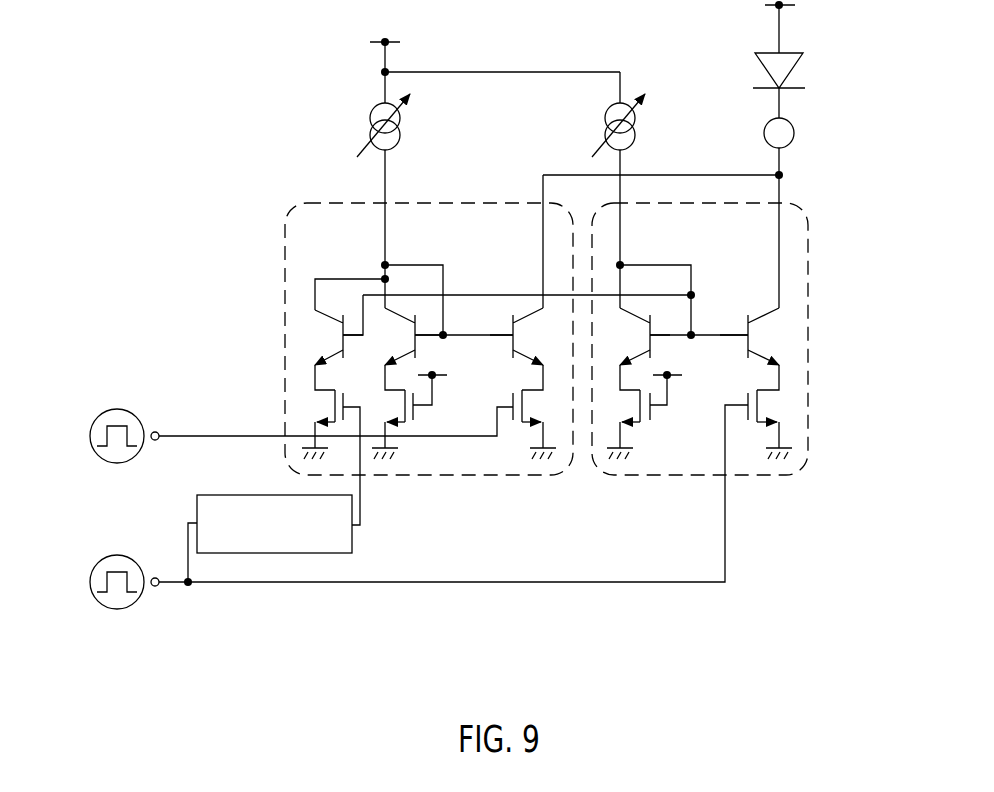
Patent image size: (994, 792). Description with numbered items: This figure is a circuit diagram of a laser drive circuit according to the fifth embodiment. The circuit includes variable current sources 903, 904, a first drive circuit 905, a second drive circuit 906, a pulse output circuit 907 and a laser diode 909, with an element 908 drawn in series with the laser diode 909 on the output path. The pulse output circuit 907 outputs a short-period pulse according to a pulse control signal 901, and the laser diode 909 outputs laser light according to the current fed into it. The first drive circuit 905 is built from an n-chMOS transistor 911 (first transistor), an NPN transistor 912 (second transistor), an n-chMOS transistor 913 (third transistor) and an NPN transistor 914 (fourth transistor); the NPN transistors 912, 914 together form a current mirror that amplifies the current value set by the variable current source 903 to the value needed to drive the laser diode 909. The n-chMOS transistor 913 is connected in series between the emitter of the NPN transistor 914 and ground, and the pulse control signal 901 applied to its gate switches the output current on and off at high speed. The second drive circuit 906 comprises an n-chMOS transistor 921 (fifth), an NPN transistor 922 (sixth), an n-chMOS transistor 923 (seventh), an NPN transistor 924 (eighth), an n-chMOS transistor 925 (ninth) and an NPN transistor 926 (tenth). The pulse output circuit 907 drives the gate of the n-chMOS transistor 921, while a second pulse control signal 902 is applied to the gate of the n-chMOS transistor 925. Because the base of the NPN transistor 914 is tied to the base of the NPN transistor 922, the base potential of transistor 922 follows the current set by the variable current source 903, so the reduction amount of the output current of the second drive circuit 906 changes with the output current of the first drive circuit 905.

The pulse control signal 901 is at (90, 582).
The second pulse control signal 902 is at (90, 436).
The variable current source 903 is at (603, 122).
The variable current source 904 is at (368, 122).
The first drive circuit 905 is at (808, 282).
The second drive circuit 906 is at (285, 255).
The pulse output circuit 907 is at (197, 507).
The current meter / load 908 is at (795, 133).
The laser diode 909 is at (795, 70).
The n-chMOS transistor 911 is at (640, 425).
The NPN transistor 912 is at (637, 313).
The n-chMOS transistor 913 is at (770, 405).
The NPN transistor 914 is at (770, 337).
The n-chMOS transistor 921 is at (315, 404).
The NPN transistor 922 is at (315, 337).
The n-chMOS transistor 923 is at (405, 425).
The NPN transistor 924 is at (403, 315).
The n-chMOS transistor 925 is at (547, 407).
The NPN transistor 926 is at (528, 312).